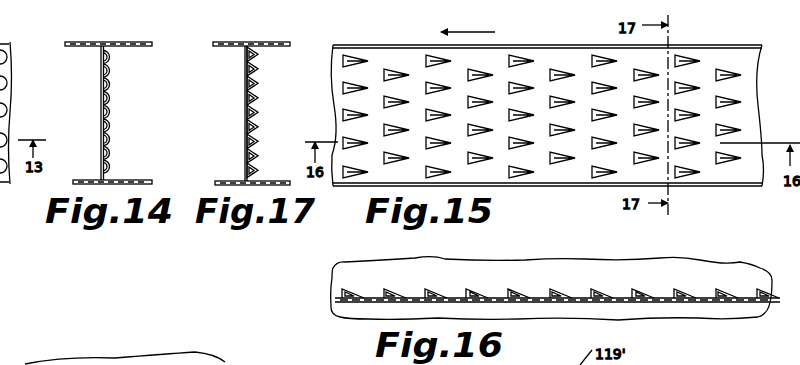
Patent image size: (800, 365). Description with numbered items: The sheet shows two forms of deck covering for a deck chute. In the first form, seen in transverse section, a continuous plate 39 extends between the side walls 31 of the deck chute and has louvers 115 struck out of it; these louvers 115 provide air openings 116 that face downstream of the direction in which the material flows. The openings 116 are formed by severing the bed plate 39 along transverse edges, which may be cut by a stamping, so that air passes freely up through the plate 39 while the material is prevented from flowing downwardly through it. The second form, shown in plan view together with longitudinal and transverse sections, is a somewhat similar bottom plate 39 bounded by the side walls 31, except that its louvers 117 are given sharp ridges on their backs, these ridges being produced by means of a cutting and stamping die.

In FIG. 14, the side walls 31 is at (135, 42).
In FIG. 15, the side walls 31 is at (542, 45).
In FIG. 16, the side walls 31 is at (722, 364).
In FIG. 14, the plate 39 is at (104, 80).
In FIG. 16, the plate 39 is at (332, 297).
In FIG. 14, the louvers 115 is at (110, 110).
In FIG. 14, the air openings 116 is at (107, 127).
In FIG. 17, the louvers 117 is at (258, 115).
In FIG. 15, the louvers 117 is at (388, 70).
In FIG. 16, the louvers 117 is at (605, 298).